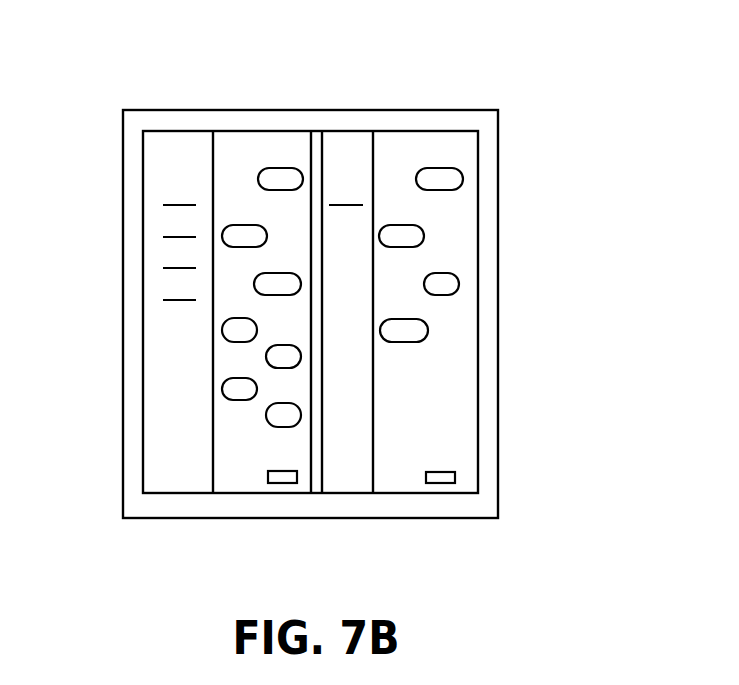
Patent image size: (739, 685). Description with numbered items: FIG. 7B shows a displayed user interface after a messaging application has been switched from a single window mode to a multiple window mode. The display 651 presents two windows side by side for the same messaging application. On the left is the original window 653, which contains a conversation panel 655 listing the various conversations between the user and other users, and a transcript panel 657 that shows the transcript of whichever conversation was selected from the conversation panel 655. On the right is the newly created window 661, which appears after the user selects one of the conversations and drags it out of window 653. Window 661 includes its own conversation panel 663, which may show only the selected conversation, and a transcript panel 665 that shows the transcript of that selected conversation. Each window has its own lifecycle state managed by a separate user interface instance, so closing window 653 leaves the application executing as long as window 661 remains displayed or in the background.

The display 651 is at (442, 110).
The window 653 is at (143, 172).
The conversation panel 655 is at (185, 470).
The transcript panel 657 is at (252, 470).
The window 661 is at (478, 193).
The conversation panel 663 is at (345, 470).
The transcript panel 665 is at (465, 477).